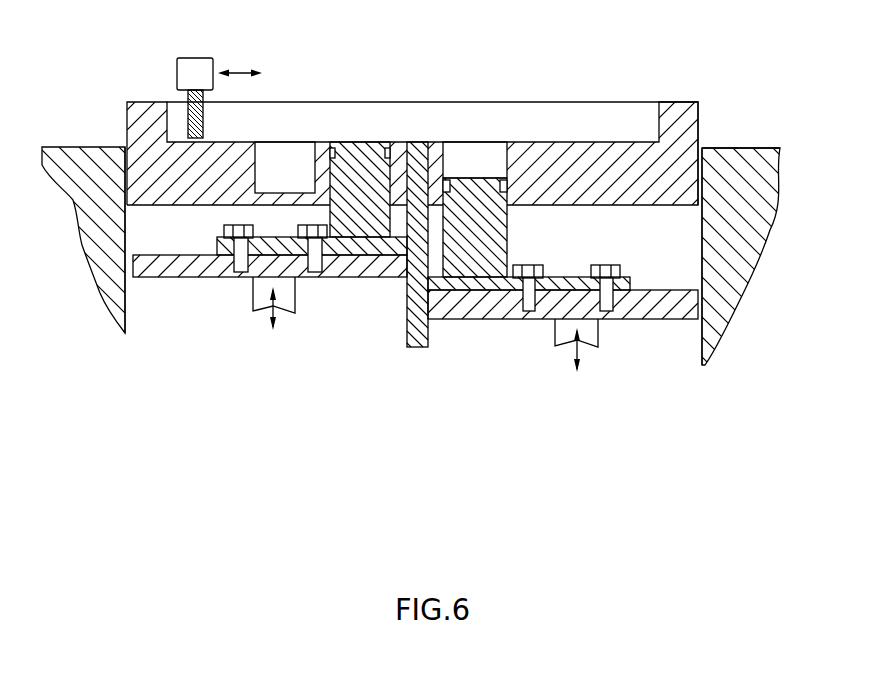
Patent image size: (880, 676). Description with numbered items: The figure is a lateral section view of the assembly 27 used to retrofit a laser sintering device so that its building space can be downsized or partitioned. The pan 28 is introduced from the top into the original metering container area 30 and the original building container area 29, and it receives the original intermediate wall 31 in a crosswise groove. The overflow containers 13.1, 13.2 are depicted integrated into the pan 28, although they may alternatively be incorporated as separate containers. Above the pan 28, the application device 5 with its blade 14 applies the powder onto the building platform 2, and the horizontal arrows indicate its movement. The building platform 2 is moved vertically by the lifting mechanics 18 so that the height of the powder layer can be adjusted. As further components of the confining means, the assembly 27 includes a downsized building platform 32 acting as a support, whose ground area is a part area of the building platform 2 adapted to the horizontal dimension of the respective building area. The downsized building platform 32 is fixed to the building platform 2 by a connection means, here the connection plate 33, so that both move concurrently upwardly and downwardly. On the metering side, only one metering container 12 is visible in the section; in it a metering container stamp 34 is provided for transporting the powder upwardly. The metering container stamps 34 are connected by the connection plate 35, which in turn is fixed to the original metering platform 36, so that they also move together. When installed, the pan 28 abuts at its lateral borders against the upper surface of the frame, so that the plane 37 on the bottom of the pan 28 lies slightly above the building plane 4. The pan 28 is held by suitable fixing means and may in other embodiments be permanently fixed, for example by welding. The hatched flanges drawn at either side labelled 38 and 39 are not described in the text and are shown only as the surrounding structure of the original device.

The building platform 2 is at (187, 278).
The building plane 4 is at (738, 133).
The application device 5 is at (152, 82).
The metering container 12 is at (479, 154).
The overflow container 13.1 is at (293, 155).
The overflow container 13.2 is at (459, 100).
The blade 14 is at (203, 128).
The lifting mechanics 18 is at (265, 312).
The assembly 27 is at (556, 84).
The pan 28 is at (685, 102).
The original building container area 29 is at (145, 335).
The original metering container area 30 is at (693, 355).
The original intermediate wall 31 is at (412, 323).
The downsized building platform 32 is at (339, 238).
The connection plate 33 is at (407, 238).
The metering container stamp 34 is at (467, 257).
The connection plate 35 is at (518, 289).
The original metering platform 36 is at (637, 312).
The plane 37 is at (608, 131).
The right flange 38 is at (748, 178).
The left flange 39 is at (97, 177).